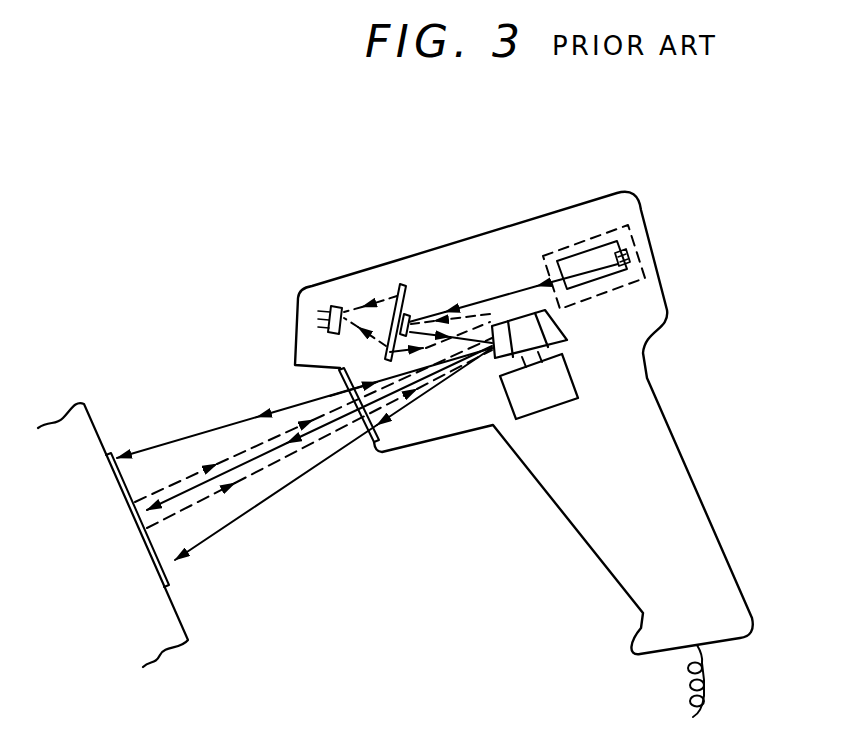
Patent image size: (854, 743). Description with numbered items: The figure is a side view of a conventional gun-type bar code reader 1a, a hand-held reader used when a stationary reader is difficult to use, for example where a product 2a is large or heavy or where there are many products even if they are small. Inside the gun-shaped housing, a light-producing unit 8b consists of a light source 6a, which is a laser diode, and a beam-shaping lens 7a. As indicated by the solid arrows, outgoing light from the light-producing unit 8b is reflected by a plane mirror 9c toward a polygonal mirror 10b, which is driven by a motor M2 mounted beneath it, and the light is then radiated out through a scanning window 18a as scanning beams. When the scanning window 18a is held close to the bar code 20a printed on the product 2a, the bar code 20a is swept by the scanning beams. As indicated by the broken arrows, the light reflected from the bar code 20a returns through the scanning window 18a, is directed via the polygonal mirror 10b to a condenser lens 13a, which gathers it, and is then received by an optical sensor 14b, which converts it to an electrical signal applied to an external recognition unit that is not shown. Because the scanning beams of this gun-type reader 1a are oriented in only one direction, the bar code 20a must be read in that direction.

The gun type reader 1a is at (385, 172).
The product 2a is at (88, 425).
The bar code 20a is at (127, 487).
The scanning window 18a is at (370, 445).
The optical sensor 14b is at (343, 306).
The condenser lens 13a is at (398, 287).
The plane mirror 9c is at (411, 324).
The light-producing unit 8b is at (557, 252).
The beam-shaping lens 7a is at (583, 253).
The light source 6a is at (627, 252).
The polygonal mirror 10b is at (557, 327).
The motor M2 is at (560, 400).